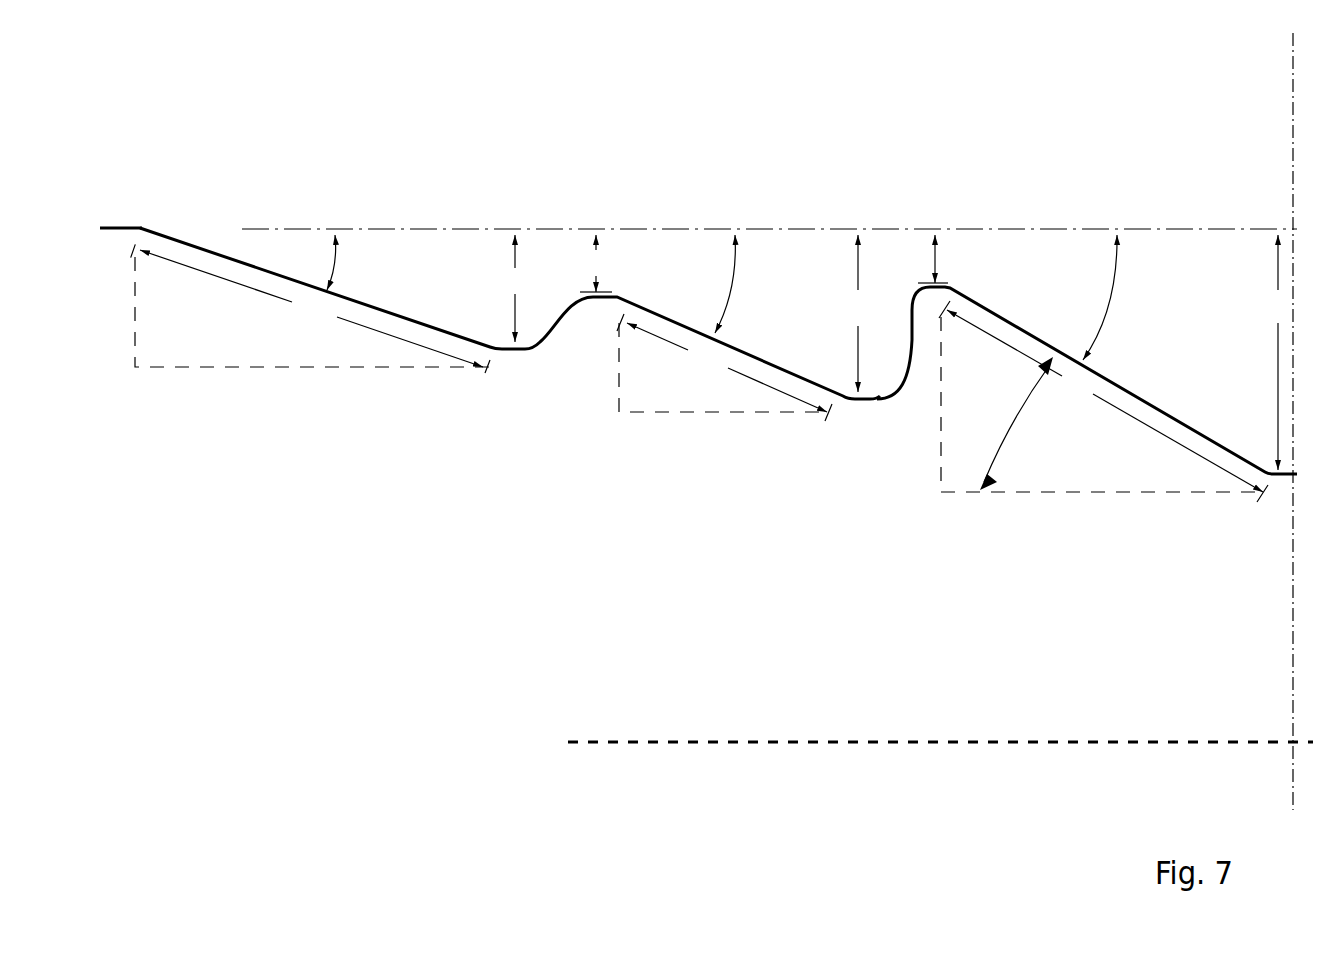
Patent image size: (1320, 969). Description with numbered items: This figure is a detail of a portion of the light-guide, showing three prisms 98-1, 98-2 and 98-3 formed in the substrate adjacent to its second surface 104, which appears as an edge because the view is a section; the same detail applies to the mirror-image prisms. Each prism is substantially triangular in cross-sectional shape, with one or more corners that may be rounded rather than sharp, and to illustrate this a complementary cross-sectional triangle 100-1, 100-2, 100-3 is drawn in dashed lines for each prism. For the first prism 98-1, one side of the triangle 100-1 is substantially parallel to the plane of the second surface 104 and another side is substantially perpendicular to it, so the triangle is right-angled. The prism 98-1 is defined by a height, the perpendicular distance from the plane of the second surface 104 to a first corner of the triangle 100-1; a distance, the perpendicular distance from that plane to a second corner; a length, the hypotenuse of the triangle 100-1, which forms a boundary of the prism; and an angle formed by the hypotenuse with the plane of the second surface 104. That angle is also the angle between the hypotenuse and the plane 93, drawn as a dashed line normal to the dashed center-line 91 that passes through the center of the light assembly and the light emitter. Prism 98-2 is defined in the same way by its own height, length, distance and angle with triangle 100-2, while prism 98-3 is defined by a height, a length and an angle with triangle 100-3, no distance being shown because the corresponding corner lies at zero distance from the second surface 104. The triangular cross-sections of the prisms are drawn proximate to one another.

The second surface 104 is at (107, 227).
The prism 98-3 is at (440, 282).
The prism 98-2 is at (808, 282).
The prism 98-1 is at (1203, 282).
The cross-sectional triangle 100-3 is at (243, 332).
The cross-sectional triangle 100-2 is at (642, 383).
The cross-sectional triangle 100-1 is at (960, 457).
The center-line 91 is at (1287, 570).
The plane 93 is at (778, 747).